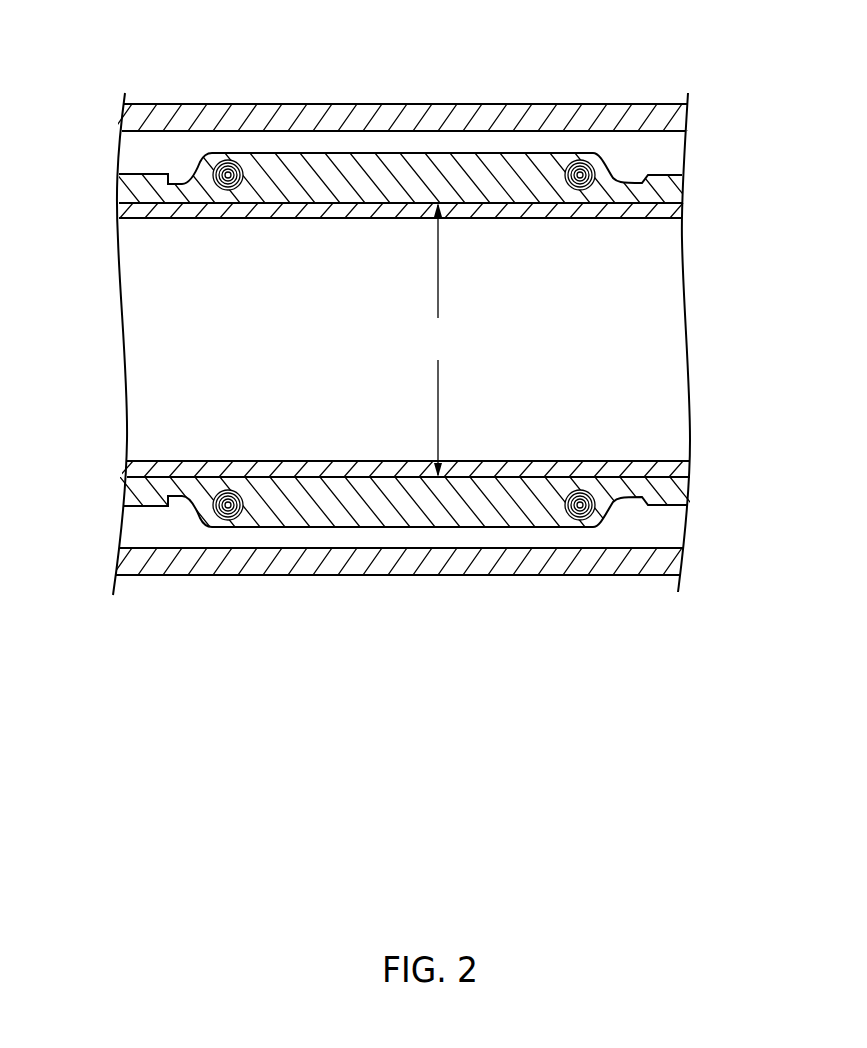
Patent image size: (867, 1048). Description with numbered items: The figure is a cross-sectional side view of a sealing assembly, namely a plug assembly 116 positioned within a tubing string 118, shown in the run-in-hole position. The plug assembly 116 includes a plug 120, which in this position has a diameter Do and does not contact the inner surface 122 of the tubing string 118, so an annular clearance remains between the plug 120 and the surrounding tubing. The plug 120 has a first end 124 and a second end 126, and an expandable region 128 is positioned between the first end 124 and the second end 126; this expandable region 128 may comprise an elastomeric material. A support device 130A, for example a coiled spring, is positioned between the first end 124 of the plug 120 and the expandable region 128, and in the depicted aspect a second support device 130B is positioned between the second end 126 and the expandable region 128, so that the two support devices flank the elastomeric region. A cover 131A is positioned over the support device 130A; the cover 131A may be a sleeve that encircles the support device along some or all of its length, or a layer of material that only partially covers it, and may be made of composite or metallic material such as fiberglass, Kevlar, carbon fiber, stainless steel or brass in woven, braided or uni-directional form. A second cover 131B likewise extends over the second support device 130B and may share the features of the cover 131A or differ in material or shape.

The plug assembly 116 is at (183, 181).
The tubing string 118 is at (421, 104).
The plug 120 is at (515, 151).
The inner surface 122 is at (154, 543).
The first end 124 is at (142, 161).
The second end 126 is at (666, 520).
The expandable region 128 is at (348, 531).
The support device 130A is at (232, 165).
The second support device 130B is at (582, 163).
The cover 131A is at (243, 181).
The second cover 131B is at (655, 190).
The diameter Do is at (442, 340).